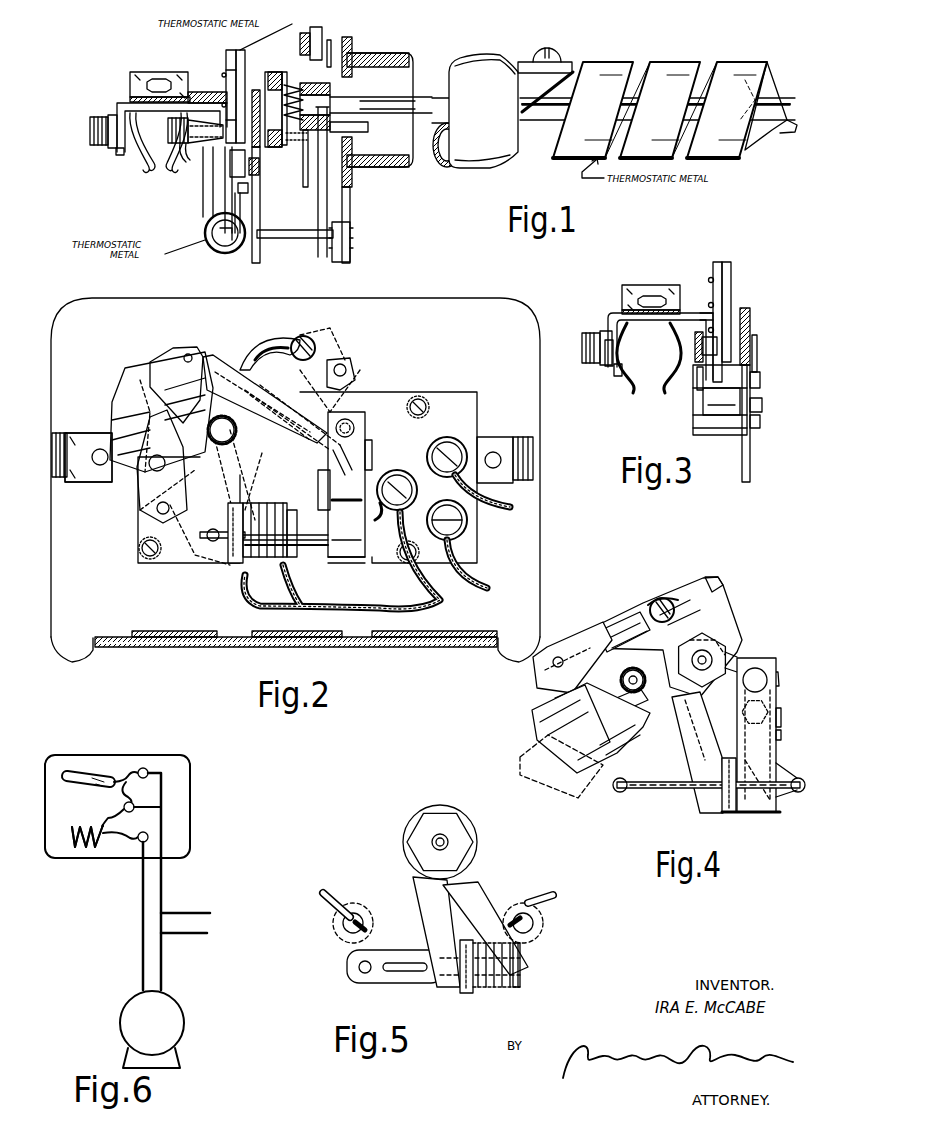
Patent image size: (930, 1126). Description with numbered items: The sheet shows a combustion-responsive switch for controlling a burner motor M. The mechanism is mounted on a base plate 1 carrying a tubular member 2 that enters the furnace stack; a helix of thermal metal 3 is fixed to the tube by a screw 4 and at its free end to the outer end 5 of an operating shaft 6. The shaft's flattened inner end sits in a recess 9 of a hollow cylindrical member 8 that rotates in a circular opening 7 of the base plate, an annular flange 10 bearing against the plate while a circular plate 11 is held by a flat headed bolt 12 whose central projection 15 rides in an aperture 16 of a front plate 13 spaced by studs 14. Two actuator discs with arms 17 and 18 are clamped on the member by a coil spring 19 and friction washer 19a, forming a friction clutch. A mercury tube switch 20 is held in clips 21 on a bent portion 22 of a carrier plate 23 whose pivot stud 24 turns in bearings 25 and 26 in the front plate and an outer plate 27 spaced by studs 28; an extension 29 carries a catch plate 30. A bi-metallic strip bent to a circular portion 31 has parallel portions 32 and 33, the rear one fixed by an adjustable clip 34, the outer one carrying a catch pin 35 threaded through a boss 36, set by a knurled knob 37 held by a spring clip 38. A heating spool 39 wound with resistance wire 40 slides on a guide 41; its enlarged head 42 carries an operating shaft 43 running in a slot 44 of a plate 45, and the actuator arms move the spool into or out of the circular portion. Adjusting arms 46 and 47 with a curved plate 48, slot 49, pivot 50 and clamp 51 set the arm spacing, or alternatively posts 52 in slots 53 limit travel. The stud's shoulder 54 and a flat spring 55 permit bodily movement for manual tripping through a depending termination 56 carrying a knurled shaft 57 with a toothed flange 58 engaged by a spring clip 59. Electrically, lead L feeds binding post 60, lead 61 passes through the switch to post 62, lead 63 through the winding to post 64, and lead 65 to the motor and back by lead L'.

In FIG. 1, the base plate 1 is at (350, 45).
In FIG. 2, the base plate 1 is at (545, 500).
In FIG. 1, the tubular member 2 is at (396, 55).
In FIG. 1, the spiral or helix of bi-metallic or thermal metal 3 is at (612, 65).
In FIG. 1, the screw 4 is at (562, 52).
In FIG. 1, the outer end of operating shaft 5 is at (785, 110).
In FIG. 1, the operating shaft 6 is at (432, 98).
In FIG. 1, the circular opening 7 is at (332, 92).
In FIG. 1, the hollow cylindrical member 8 is at (365, 126).
In FIG. 1, the recess 9 is at (402, 97).
In FIG. 1, the annular flange or shoulder 10 is at (305, 160).
In FIG. 1, the circular plate 11 is at (284, 70).
In FIG. 1, the flat headed bolt 12 is at (270, 72).
In FIG. 2, the flat headed bolt 12 is at (345, 405).
In FIG. 4, the flat headed bolt 12 is at (725, 660).
In FIG. 5, the flat headed bolt 12 is at (407, 837).
In FIG. 1, the front plate 13 is at (258, 200).
In FIG. 2, the front plate 13 is at (175, 563).
In FIG. 3, the front plate 13 is at (752, 465).
In FIG. 2, the studs 14 is at (112, 420).
In FIG. 1, the central projection 15 is at (255, 92).
In FIG. 4, the central projection 15 is at (713, 650).
In FIG. 5, the central projection 15 is at (450, 842).
In FIG. 2, the aperture 16 is at (290, 395).
In FIG. 1, the actuator arm 17 is at (350, 210).
In FIG. 2, the actuator arm 17 is at (328, 510).
In FIG. 4, the actuator arm 17 is at (778, 765).
In FIG. 5, the actuator arm 17 is at (487, 895).
In FIG. 1, the actuator arm 18 is at (318, 220).
In FIG. 2, the actuator arm 18 is at (195, 552).
In FIG. 4, the actuator arm 18 is at (695, 757).
In FIG. 5, the actuator arm 18 is at (420, 887).
In FIG. 1, the coil spring 19 is at (290, 83).
In FIG. 1, the friction plate or washer 19a is at (292, 140).
In FIG. 4, the mercury tube switch 20 is at (520, 757).
In FIG. 6, the mercury tube switch 20 is at (83, 768).
In FIG. 1, the clips 21 is at (130, 150).
In FIG. 2, the clips 21 is at (128, 372).
In FIG. 3, the clips 21 is at (632, 375).
In FIG. 4, the clips 21 is at (540, 727).
In FIG. 1, the bent portion 22 is at (200, 92).
In FIG. 3, the bent portion 22 is at (688, 308).
In FIG. 1, the carrier plate 23 is at (226, 175).
In FIG. 2, the carrier plate 23 is at (262, 453).
In FIG. 3, the carrier plate 23 is at (697, 390).
In FIG. 3, the pivot stud 24 is at (700, 362).
In FIG. 3, the bearing 25 is at (750, 330).
In FIG. 3, the bearing 26 is at (692, 345).
In FIG. 1, the plate 27 is at (203, 200).
In FIG. 2, the plate 27 is at (137, 492).
In FIG. 3, the plate 27 is at (693, 420).
In FIG. 3, the studs 28 is at (728, 415).
In FIG. 1, the extension 29 is at (226, 55).
In FIG. 2, the extension 29 is at (168, 358).
In FIG. 3, the extension 29 is at (712, 268).
In FIG. 4, the extension 29 is at (535, 684).
In FIG. 1, the plate 30 is at (246, 62).
In FIG. 2, the plate 30 is at (206, 360).
In FIG. 3, the plate 30 is at (733, 310).
In FIG. 4, the plate 30 is at (723, 607).
In FIG. 1, the circular portion 31 is at (208, 247).
In FIG. 2, the circular portion 31 is at (335, 563).
In FIG. 4, the circular portion 31 is at (778, 815).
In FIG. 1, the outer parallel portion 32 is at (240, 188).
In FIG. 2, the outer parallel portion 32 is at (320, 492).
In FIG. 4, the outer parallel portion 32 is at (780, 707).
In FIG. 1, the rearmost parallel portion 33 is at (237, 210).
In FIG. 1, the adjustable clip 34 is at (259, 168).
In FIG. 2, the adjustable clip 34 is at (365, 455).
In FIG. 4, the adjustable clip 34 is at (782, 720).
In FIG. 1, the catch pin 35 is at (230, 165).
In FIG. 1, the boss 36 is at (205, 147).
In FIG. 1, the knurled knob 37 is at (168, 125).
In FIG. 4, the knurled knob 37 is at (760, 672).
In FIG. 1, the spring clip 38 is at (186, 155).
In FIG. 2, the spring clip 38 is at (365, 425).
In FIG. 4, the spring clip 38 is at (765, 680).
In FIG. 2, the spool 39 is at (292, 555).
In FIG. 4, the spool 39 is at (780, 800).
In FIG. 5, the spool 39 is at (522, 975).
In FIG. 2, the electrical resistance wire 40 is at (262, 557).
In FIG. 5, the electrical resistance wire 40 is at (498, 990).
In FIG. 6, the electrical resistance wire 40 is at (85, 858).
In FIG. 1, the guide 41 is at (220, 255).
In FIG. 2, the guide 41 is at (328, 526).
In FIG. 4, the guide 41 is at (622, 793).
In FIG. 2, the enlarged head 42 is at (230, 563).
In FIG. 4, the enlarged head 42 is at (725, 815).
In FIG. 5, the enlarged head 42 is at (466, 993).
In FIG. 1, the operating shaft 43 is at (292, 238).
In FIG. 2, the operating shaft 43 is at (207, 536).
In FIG. 4, the operating shaft 43 is at (720, 773).
In FIG. 5, the slot 44 is at (418, 972).
In FIG. 1, the plate 45 is at (340, 262).
In FIG. 5, the plate 45 is at (357, 985).
In FIG. 2, the adjusting arm 46 is at (305, 337).
In FIG. 4, the adjusting arm 46 is at (658, 598).
In FIG. 1, the adjusting arm 47 is at (330, 48).
In FIG. 2, the adjusting arm 47 is at (352, 368).
In FIG. 4, the adjusting arm 47 is at (713, 577).
In FIG. 1, the curved plate 48 is at (322, 32).
In FIG. 2, the curved plate 48 is at (265, 345).
In FIG. 2, the curved slot 49 is at (272, 350).
In FIG. 2, the pivot 50 is at (347, 370).
In FIG. 1, the threaded clamp 51 is at (310, 28).
In FIG. 2, the threaded clamp 51 is at (315, 340).
In FIG. 5, the posts 52 is at (343, 924).
In FIG. 5, the slots 53 is at (340, 897).
In FIG. 3, the shoulder 54 is at (757, 393).
In FIG. 2, the flat spring 55 is at (145, 503).
In FIG. 3, the flat spring 55 is at (760, 340).
In FIG. 1, the angular depending termination 56 is at (116, 152).
In FIG. 3, the angular depending termination 56 is at (618, 375).
In FIG. 4, the angular depending termination 56 is at (645, 690).
In FIG. 1, the knurled headed shaft 57 is at (95, 115).
In FIG. 3, the knurled headed shaft 57 is at (582, 347).
In FIG. 4, the knurled headed shaft 57 is at (612, 730).
In FIG. 3, the toothed flange 58 is at (607, 365).
In FIG. 4, the toothed flange 58 is at (615, 630).
In FIG. 1, the spring clip 59 is at (130, 80).
In FIG. 3, the spring clip 59 is at (622, 303).
In FIG. 4, the spring clip 59 is at (647, 615).
In FIG. 2, the binding post 60 is at (462, 445).
In FIG. 6, the binding post 60 is at (158, 770).
In FIG. 2, the lead 61 is at (400, 470).
In FIG. 6, the lead 61 is at (125, 772).
In FIG. 2, the binding post 62 is at (415, 515).
In FIG. 6, the binding post 62 is at (152, 807).
In FIG. 2, the lead 63 is at (338, 605).
In FIG. 6, the lead 63 is at (90, 820).
In FIG. 2, the binding post 64 is at (470, 535).
In FIG. 6, the binding post 64 is at (135, 850).
In FIG. 6, the lead 65 is at (143, 930).
In FIG. 2, the lead L is at (491, 495).
In FIG. 6, the lead L is at (185, 899).
In FIG. 2, the lead L' is at (482, 564).
In FIG. 6, the lead L' is at (188, 943).
In FIG. 6, the motor M is at (178, 1023).